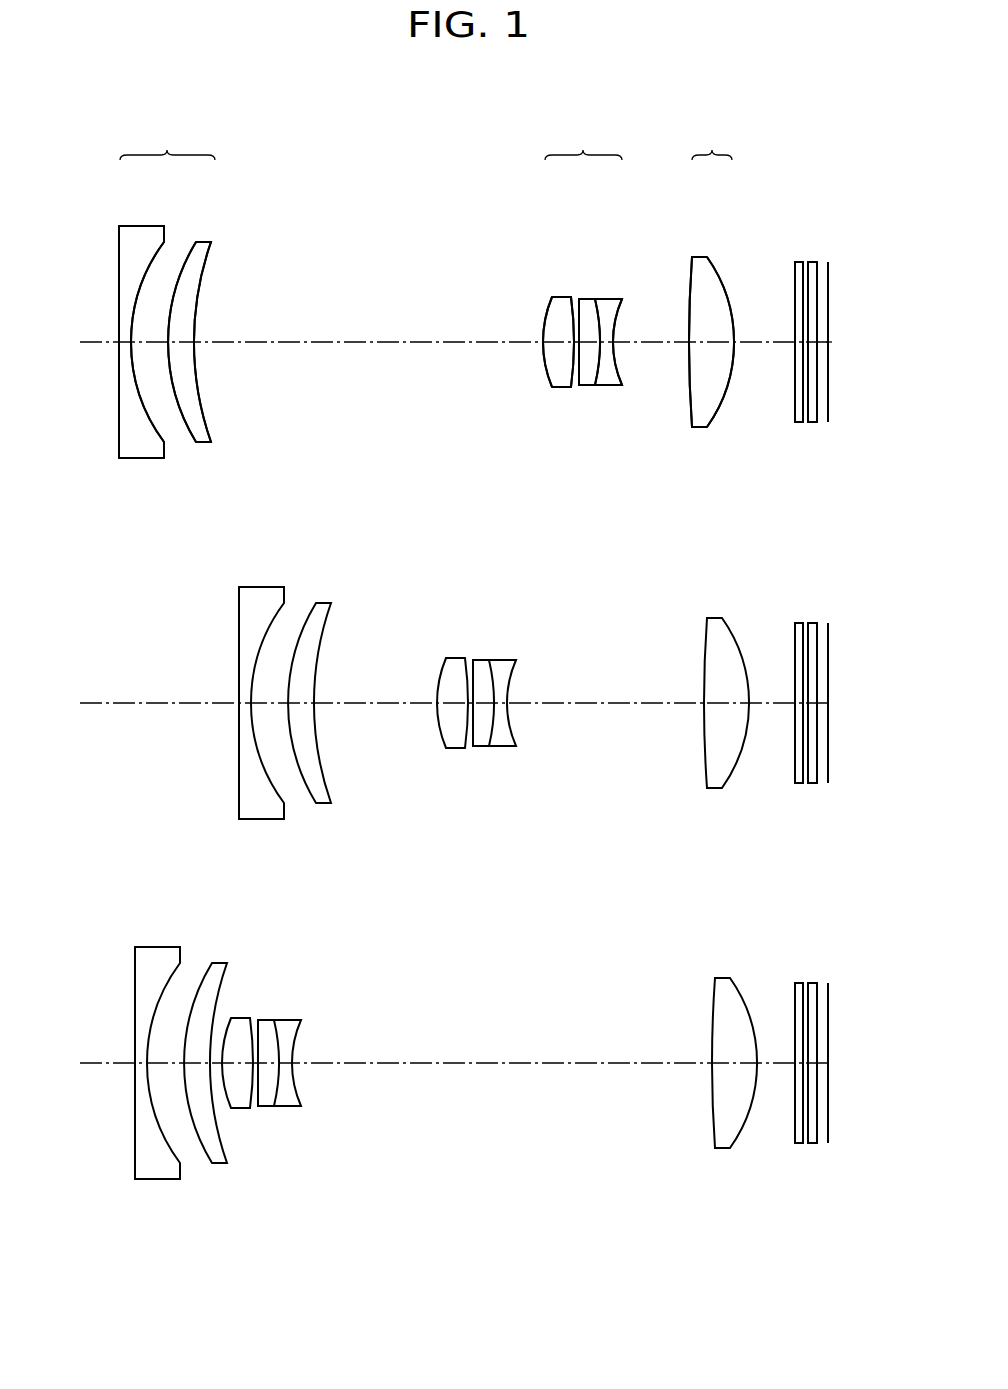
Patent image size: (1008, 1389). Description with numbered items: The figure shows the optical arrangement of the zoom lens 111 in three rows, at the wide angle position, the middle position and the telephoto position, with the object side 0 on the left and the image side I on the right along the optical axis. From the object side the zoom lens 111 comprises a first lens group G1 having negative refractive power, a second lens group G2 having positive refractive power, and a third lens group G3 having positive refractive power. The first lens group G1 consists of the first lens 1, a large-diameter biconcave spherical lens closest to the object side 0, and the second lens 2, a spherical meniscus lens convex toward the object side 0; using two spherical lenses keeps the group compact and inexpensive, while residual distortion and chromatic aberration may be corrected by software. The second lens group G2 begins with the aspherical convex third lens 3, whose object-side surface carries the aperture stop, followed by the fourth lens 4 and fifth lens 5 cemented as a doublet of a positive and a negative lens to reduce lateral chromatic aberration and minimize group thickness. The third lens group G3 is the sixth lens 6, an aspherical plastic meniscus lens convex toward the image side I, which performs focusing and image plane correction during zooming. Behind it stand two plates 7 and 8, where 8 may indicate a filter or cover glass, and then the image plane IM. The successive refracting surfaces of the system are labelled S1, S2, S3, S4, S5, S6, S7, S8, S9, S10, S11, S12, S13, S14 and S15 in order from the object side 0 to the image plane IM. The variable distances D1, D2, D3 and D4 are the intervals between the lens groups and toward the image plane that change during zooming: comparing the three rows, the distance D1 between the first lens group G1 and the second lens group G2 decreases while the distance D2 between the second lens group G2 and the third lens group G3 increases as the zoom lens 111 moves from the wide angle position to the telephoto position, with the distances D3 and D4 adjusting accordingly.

The zoom lens 111 is at (394, 131).
The object side 0 is at (440, 343).
The first lens group G1 is at (167, 141).
The second lens group G2 is at (583, 141).
The third lens group G3 is at (712, 141).
The first lens 1 is at (140, 226).
The second lens 2 is at (204, 242).
The third lens 3 is at (561, 297).
The fourth lens 4 is at (587, 299).
The fifth lens 5 is at (609, 299).
The sixth lens 6 is at (700, 257).
The optical filter 7 is at (799, 262).
The filter or cover glass 8 is at (812, 262).
The image plane IM is at (828, 262).
The image side I is at (839, 343).
The variable distance D1 is at (370, 342).
The variable distance D2 is at (657, 342).
The variable distance D3 is at (764, 342).
The variable distance D4 is at (822, 340).
The object-side surface of first lens S1 is at (119, 420).
The image-side surface of first lens S2 is at (152, 420).
The object-side surface of second lens S3 is at (186, 422).
The image-side surface of second lens S4 is at (205, 418).
The object-side surface of third lens (aperture stop ST) S5 is at (548, 380).
The image-side surface of third lens S6 is at (568, 378).
The object-side surface of fourth lens S7 is at (582, 380).
The cemented surface of fourth and fifth lenses S8 is at (600, 378).
The image-side surface of fifth lens S9 is at (621, 380).
The object-side surface of sixth lens S10 is at (692, 400).
The image-side surface of sixth lens S11 is at (720, 402).
The object-side surface of optical filter S12 is at (795, 404).
The image-side surface of optical filter S13 is at (803, 404).
The object-side surface of cover glass S14 is at (808, 400).
The image-side surface of cover glass S15 is at (818, 378).